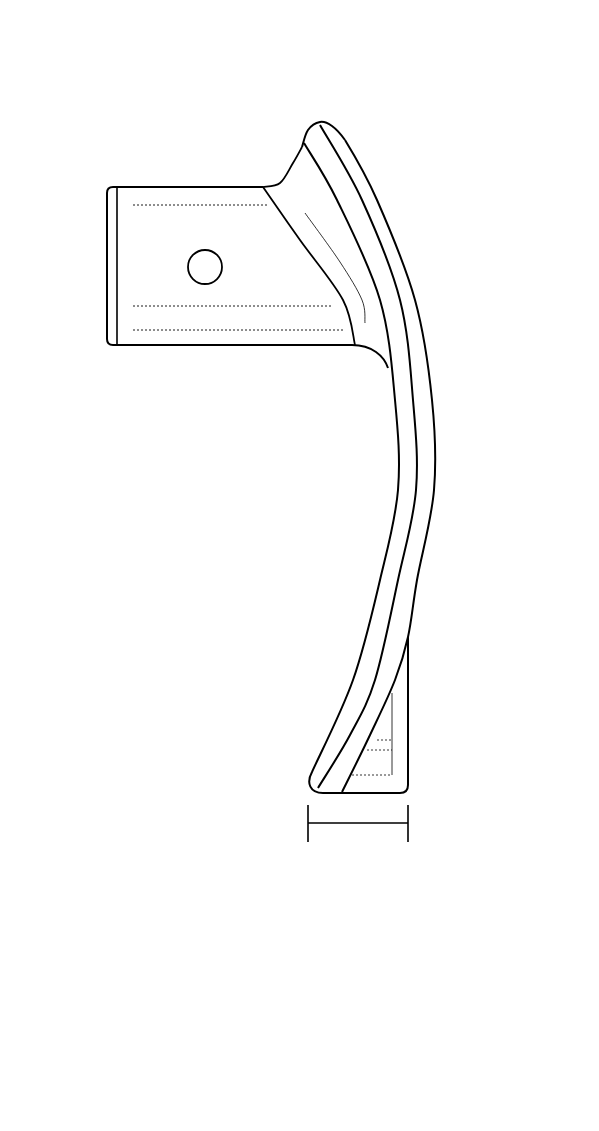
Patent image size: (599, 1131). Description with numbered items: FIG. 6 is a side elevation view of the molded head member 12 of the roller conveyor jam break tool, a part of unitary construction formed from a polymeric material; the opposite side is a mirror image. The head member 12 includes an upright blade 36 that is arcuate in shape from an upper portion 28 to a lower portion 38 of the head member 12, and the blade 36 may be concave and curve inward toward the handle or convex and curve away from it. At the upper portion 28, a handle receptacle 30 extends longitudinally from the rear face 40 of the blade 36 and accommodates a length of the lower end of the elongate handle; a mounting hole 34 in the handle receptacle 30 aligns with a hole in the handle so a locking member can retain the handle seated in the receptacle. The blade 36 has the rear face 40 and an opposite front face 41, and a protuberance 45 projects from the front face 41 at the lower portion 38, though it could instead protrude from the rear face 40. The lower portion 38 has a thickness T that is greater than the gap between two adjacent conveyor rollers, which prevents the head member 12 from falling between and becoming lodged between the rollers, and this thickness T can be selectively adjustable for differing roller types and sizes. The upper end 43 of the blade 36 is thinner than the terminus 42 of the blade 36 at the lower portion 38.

The molded head member 12 is at (393, 110).
The upper portion 28 is at (371, 187).
The handle receptacle 30 is at (106, 322).
The mounting hole 34 is at (204, 266).
The upright blade 36 is at (418, 463).
The lower portion 38 is at (408, 722).
The rear face 40 is at (397, 503).
The front face 41 is at (428, 550).
The terminus 42 is at (375, 793).
The upper end 43 is at (320, 125).
The protuberance 45 is at (380, 765).
The thickness T is at (362, 823).